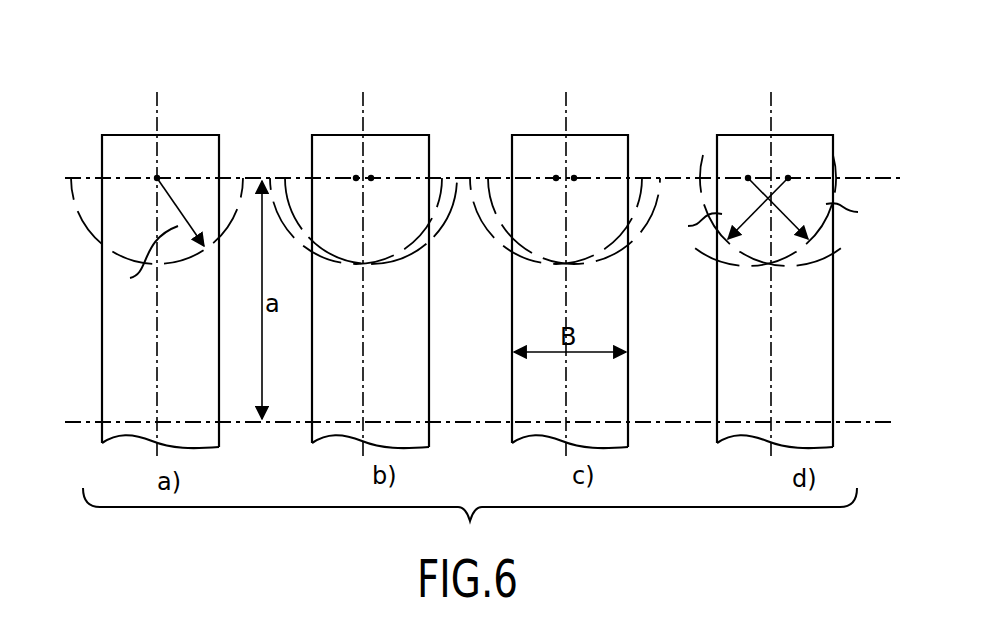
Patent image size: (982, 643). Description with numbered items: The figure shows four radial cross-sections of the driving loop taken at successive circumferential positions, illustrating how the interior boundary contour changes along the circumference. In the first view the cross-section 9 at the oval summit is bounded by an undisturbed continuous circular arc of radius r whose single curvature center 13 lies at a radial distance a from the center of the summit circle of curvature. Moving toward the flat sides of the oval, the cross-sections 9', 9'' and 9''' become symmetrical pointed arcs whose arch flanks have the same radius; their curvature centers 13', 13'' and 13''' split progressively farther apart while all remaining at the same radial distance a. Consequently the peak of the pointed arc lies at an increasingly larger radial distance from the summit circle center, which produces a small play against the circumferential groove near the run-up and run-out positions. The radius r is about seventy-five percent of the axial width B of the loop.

The cross-section 9 is at (158, 270).
The curvature center 13 is at (157, 193).
The cross-section 9' is at (364, 270).
The curvature centers 13' is at (363, 179).
The cross-section 9'' is at (570, 271).
The curvature centers 13'' is at (565, 177).
The cross-section 9''' is at (766, 269).
The curvature centers 13''' is at (771, 176).